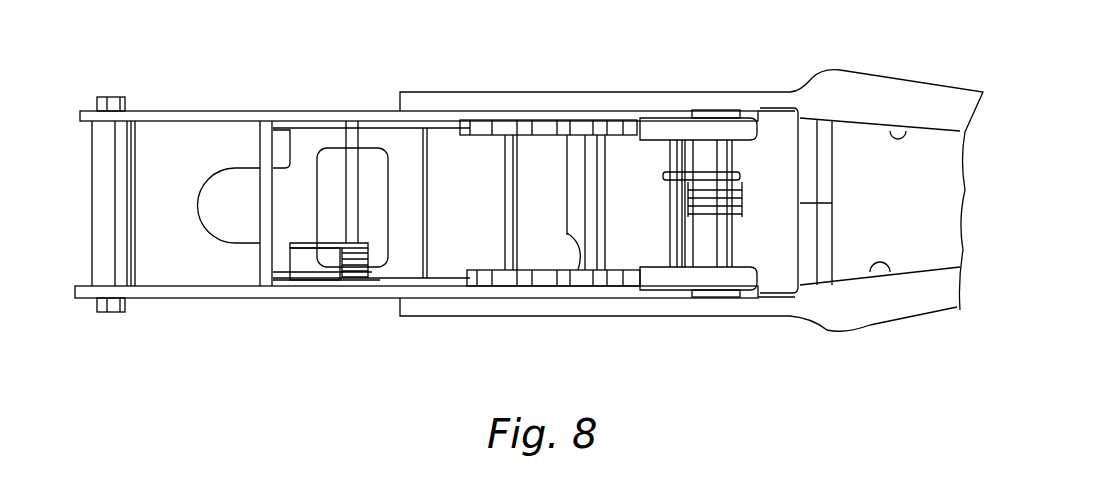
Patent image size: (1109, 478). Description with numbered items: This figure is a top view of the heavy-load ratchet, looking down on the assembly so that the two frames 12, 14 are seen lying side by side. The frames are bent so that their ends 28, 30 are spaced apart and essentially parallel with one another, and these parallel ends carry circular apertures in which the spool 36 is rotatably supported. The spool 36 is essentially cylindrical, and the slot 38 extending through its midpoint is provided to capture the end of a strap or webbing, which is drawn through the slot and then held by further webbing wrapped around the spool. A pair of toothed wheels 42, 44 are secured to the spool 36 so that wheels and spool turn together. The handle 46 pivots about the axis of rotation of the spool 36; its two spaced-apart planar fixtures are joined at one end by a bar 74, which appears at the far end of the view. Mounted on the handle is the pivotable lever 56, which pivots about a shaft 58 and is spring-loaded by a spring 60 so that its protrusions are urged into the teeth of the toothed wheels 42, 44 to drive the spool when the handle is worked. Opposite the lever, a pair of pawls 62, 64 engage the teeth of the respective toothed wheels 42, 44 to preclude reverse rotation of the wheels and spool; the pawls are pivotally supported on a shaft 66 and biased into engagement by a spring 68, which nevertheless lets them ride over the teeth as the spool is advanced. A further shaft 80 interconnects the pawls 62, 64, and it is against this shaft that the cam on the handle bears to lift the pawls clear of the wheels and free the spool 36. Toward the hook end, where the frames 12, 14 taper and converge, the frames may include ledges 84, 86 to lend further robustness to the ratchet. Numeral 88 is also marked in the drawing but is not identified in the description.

The frame 12 is at (711, 315).
The frame 14 is at (640, 93).
The frame end 28 is at (423, 317).
The frame end 30 is at (418, 92).
The spool 36 is at (528, 155).
The slot 38 is at (580, 273).
The toothed wheel 42 is at (510, 278).
The toothed wheel 44 is at (485, 133).
The handle 46 is at (202, 110).
The pivotable lever 56 is at (233, 212).
The shaft 58 is at (348, 160).
The spring 60 is at (338, 258).
The pawl 62 is at (762, 275).
The pawl 64 is at (760, 127).
The shaft 66 is at (732, 233).
The spring 68 is at (710, 170).
The bar 74 is at (96, 160).
The shaft 80 is at (663, 257).
The ledge 84 is at (868, 280).
The ledge 86 is at (917, 133).
The upper housing end 88 is at (837, 140).